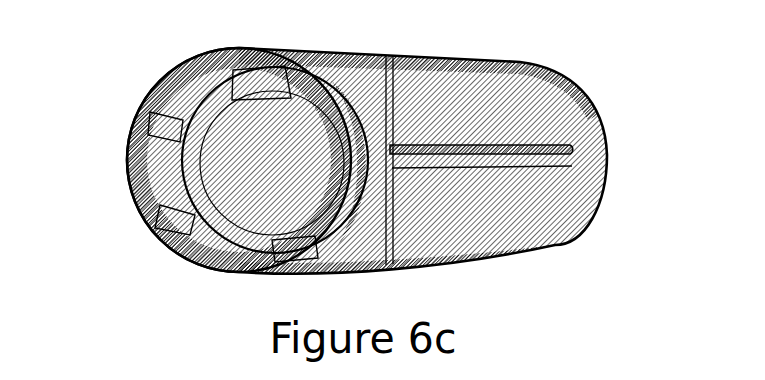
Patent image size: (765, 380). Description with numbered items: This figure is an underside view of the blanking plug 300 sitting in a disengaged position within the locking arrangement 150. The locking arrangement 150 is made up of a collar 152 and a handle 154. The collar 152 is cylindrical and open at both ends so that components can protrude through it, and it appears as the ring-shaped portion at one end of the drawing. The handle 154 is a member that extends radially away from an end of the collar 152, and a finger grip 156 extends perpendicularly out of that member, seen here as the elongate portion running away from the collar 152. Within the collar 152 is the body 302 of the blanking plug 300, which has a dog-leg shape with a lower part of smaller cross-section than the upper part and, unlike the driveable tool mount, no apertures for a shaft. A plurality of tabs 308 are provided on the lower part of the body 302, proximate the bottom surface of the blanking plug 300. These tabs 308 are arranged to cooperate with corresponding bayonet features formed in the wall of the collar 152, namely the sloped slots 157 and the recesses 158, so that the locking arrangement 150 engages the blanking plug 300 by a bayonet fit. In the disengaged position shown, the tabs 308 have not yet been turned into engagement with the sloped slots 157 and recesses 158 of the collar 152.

The locking arrangement 150 is at (375, 157).
The collar 152 is at (187, 217).
The handle 154 is at (537, 72).
The finger grip 156 is at (567, 160).
The sloped slots 157 is at (180, 130).
The recesses 158 is at (287, 228).
The blanking plug 300 is at (205, 110).
The body 302 is at (307, 117).
The tabs 308 is at (263, 85).